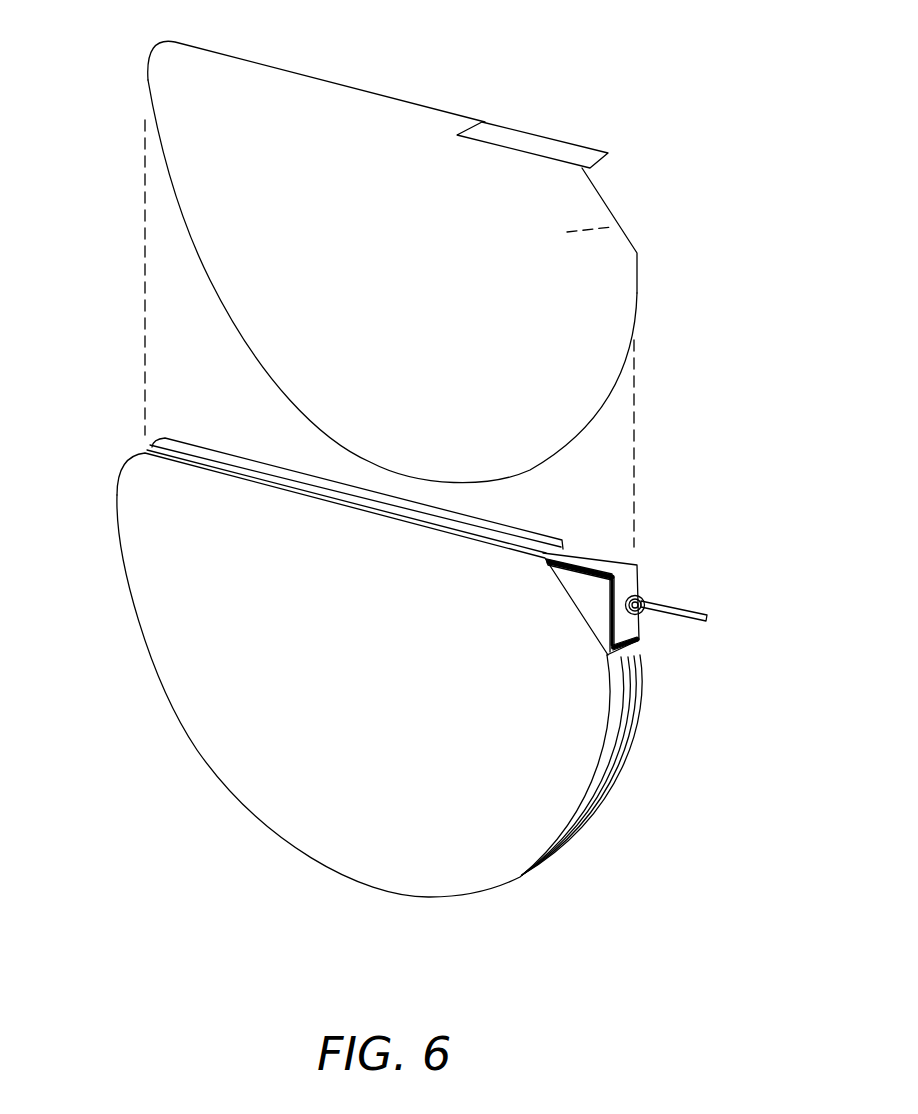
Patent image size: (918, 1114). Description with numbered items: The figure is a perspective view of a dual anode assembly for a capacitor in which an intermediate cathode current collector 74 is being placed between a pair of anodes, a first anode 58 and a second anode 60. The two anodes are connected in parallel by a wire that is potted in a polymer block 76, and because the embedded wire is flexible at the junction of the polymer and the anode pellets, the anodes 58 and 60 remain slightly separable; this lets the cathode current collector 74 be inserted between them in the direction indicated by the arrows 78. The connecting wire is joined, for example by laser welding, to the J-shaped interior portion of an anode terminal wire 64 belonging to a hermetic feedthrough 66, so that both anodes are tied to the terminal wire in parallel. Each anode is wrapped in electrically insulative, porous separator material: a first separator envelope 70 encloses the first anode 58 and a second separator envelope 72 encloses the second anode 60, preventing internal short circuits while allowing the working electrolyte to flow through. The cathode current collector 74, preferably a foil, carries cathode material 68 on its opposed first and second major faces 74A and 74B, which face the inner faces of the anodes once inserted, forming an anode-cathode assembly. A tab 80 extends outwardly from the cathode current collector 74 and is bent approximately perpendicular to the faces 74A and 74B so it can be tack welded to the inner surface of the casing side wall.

The first anode 58 is at (638, 655).
The second anode 60 is at (617, 687).
The anode terminal wire 64 is at (707, 620).
The hermetic feedthrough 66 is at (661, 590).
The cathode material 68 is at (260, 267).
The first separator envelope 70 is at (637, 747).
The second separator envelope 72 is at (642, 713).
The cathode current collector 74 is at (433, 282).
The first major face 74A is at (335, 117).
The second major face 74B is at (617, 224).
The polymer block 76 is at (587, 598).
The arrows 78 is at (504, 513).
The tab 80 is at (505, 134).